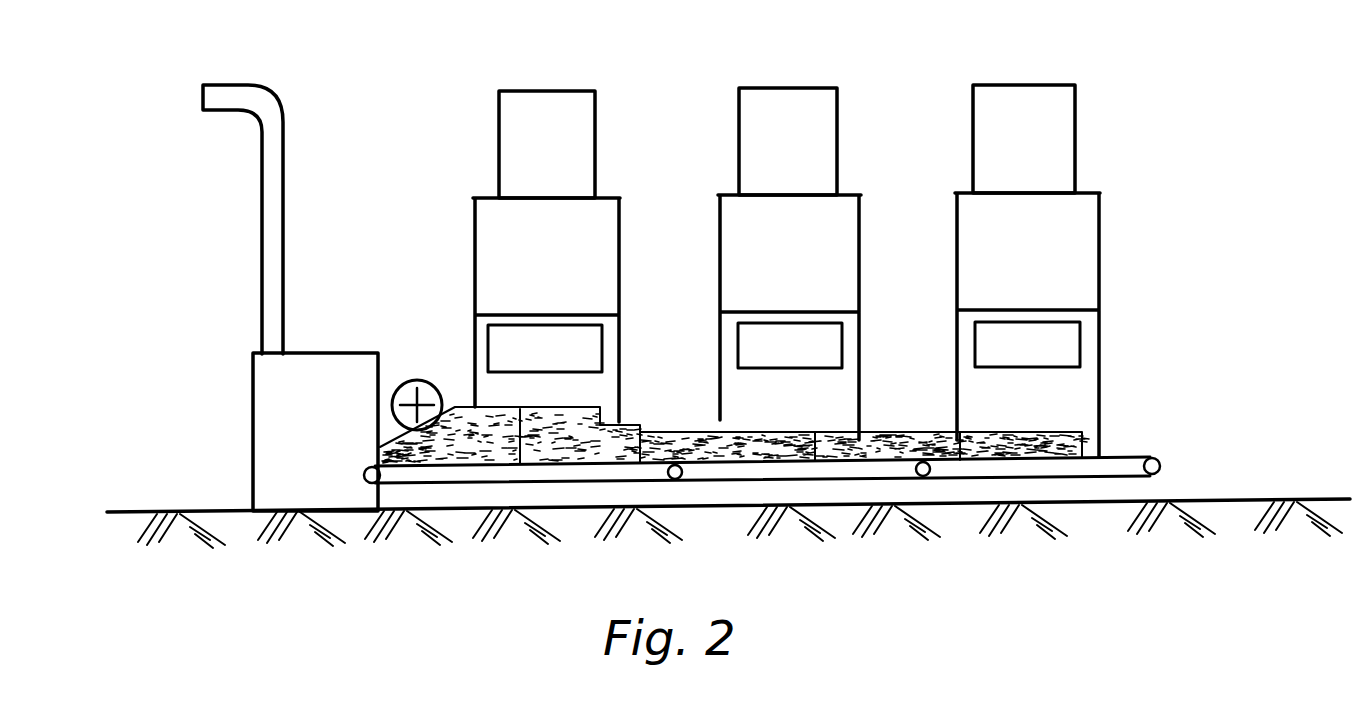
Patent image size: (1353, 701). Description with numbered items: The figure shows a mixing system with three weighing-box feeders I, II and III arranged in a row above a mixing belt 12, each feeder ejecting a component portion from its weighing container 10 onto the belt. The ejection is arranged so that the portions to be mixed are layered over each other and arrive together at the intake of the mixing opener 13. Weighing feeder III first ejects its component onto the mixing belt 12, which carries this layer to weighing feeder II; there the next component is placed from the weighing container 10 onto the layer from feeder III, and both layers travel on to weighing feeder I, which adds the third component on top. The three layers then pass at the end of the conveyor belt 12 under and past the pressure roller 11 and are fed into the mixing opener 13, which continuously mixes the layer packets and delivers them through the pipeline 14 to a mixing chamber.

The weighing container 10 is at (762, 347).
The pressure roller 11 is at (414, 380).
The mixing belt 12 is at (1017, 478).
The mixing opener 13 is at (273, 392).
The pipeline 14 is at (267, 142).
The weighing-box feeder I is at (560, 130).
The weighing-box feeder II is at (800, 130).
The weighing-box feeder III is at (1055, 125).